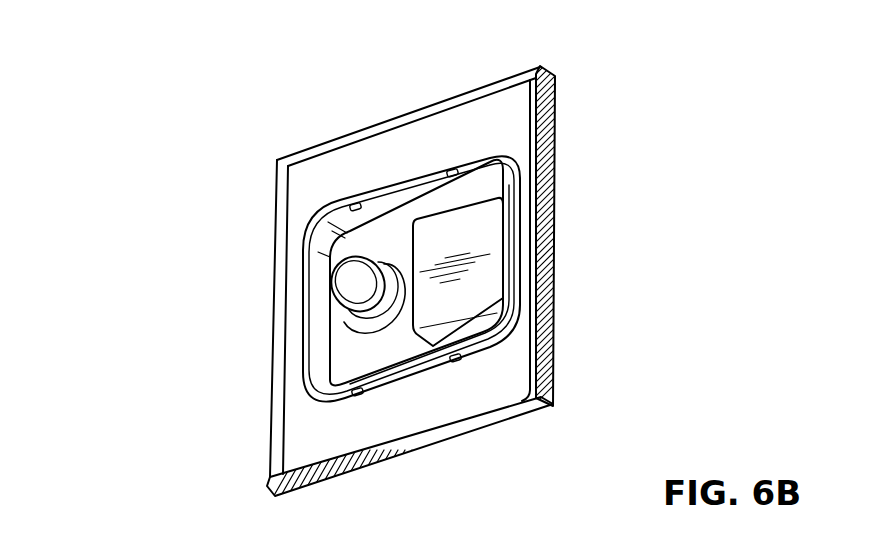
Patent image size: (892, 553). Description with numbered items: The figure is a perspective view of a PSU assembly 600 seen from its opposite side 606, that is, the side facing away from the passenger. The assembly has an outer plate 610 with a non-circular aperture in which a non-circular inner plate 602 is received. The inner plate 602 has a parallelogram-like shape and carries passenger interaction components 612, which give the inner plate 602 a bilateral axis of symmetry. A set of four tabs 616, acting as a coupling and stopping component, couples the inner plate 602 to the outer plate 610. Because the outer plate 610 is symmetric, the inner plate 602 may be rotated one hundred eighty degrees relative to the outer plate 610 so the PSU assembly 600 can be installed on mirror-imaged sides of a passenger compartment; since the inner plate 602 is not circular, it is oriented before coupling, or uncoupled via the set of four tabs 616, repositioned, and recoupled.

The PSU assembly 600 is at (226, 64).
The opposite side 606 is at (406, 66).
The outer plate 610 is at (543, 233).
The non-circular inner plate 602 is at (513, 290).
The passenger interaction components 612 is at (365, 250).
The set of four tabs 616 is at (358, 205).